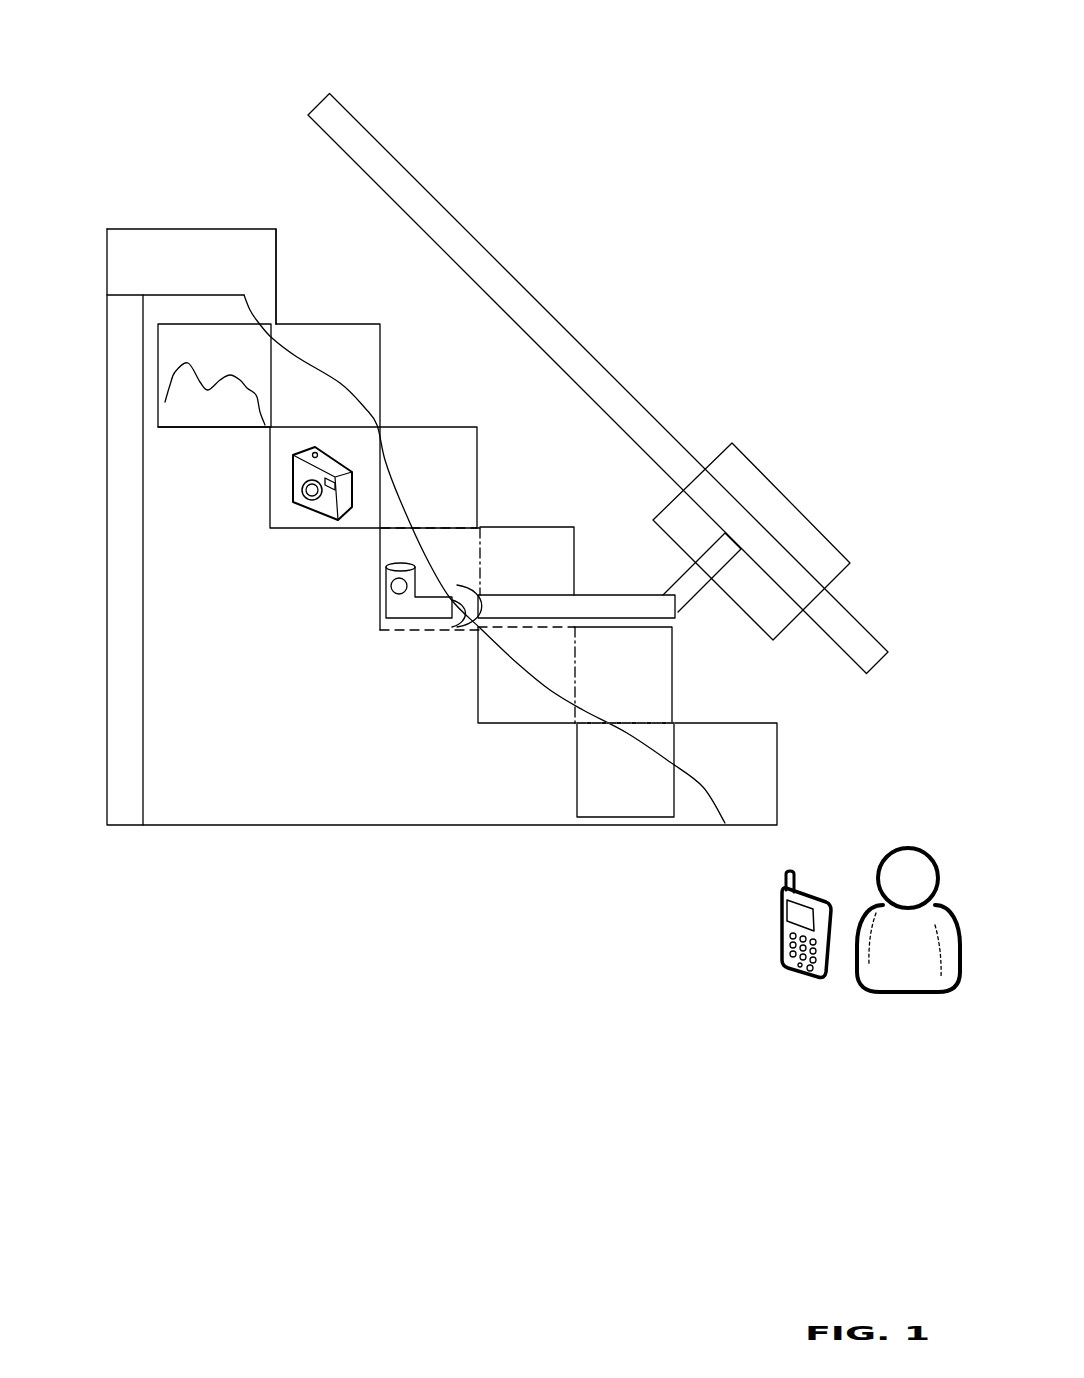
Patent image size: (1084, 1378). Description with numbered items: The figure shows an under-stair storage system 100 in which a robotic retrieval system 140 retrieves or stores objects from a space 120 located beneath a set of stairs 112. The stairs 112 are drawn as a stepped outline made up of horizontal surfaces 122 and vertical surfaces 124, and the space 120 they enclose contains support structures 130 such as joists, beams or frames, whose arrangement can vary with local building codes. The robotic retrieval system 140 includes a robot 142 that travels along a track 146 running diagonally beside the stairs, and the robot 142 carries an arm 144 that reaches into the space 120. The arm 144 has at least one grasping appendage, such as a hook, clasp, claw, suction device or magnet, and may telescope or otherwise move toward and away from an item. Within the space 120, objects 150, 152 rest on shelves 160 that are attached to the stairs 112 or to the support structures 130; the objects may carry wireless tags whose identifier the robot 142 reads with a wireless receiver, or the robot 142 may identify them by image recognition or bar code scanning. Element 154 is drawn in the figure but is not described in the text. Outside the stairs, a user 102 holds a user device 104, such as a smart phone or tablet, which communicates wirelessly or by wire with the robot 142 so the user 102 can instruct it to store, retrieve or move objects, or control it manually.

The under-stair storage system 100 is at (752, 67).
The user 102 is at (902, 870).
The user device 104 is at (783, 910).
The stairs 112 is at (125, 202).
The space 120 is at (337, 810).
The horizontal surfaces 122 is at (217, 233).
The vertical surfaces 124 is at (280, 275).
The support structures 130 is at (128, 743).
The robotic retrieval system 140 is at (563, 388).
The robot 142 is at (773, 533).
The arm 144 is at (693, 582).
The track 146 is at (318, 107).
The object 150 is at (403, 573).
The object 152 is at (307, 468).
The display 154 is at (177, 383).
The shelves 160 is at (600, 788).